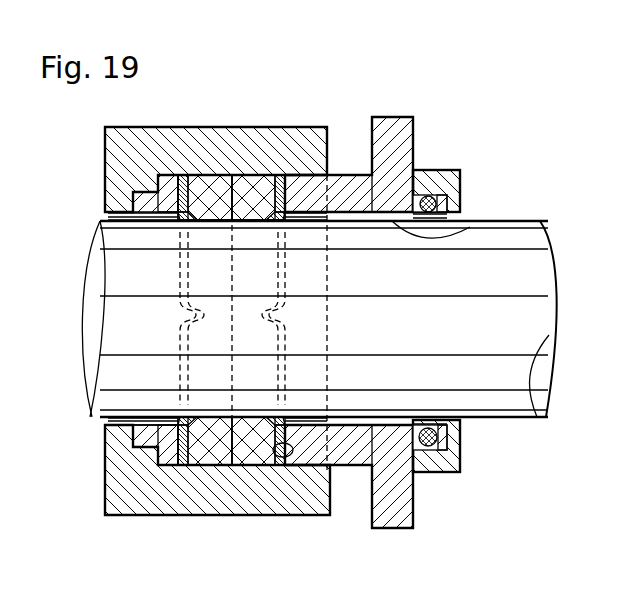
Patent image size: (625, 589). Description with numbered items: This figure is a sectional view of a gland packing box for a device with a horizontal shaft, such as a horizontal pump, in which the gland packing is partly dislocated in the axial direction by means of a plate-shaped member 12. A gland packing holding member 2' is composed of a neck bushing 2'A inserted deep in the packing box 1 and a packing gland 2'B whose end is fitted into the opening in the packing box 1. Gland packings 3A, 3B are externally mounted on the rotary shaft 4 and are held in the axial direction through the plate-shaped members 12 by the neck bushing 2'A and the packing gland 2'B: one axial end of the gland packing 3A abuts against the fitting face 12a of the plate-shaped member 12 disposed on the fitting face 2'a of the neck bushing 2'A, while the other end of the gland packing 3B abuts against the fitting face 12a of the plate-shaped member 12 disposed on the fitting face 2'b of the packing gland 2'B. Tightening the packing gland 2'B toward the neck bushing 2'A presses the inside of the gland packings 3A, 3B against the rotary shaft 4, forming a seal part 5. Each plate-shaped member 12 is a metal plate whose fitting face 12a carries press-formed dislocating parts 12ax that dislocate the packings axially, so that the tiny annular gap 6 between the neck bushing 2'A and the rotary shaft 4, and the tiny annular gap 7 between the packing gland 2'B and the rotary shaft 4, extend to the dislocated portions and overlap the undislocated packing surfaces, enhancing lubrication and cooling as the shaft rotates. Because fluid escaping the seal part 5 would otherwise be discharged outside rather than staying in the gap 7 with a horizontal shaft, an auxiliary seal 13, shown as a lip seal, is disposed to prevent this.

The packing box 1 is at (177, 513).
The gland packing holding member 2' is at (243, 242).
The neck bushing 2'A is at (199, 260).
The packing gland 2'B is at (322, 291).
The fitting face of the neck bushing 2'a is at (212, 279).
The fitting face of the packing gland 2'b is at (276, 279).
The gland packing 3A is at (220, 463).
The gland packing 3B is at (250, 463).
The rotary shaft 4 is at (93, 397).
The seal part 5 is at (283, 457).
The annular gap 6 is at (153, 218).
The annular gap 7 is at (470, 227).
The plate-shaped member 12 is at (140, 447).
The fitting face 12a is at (165, 465).
The dislocating part 12ax is at (182, 312).
The auxiliary seal 13 is at (462, 445).